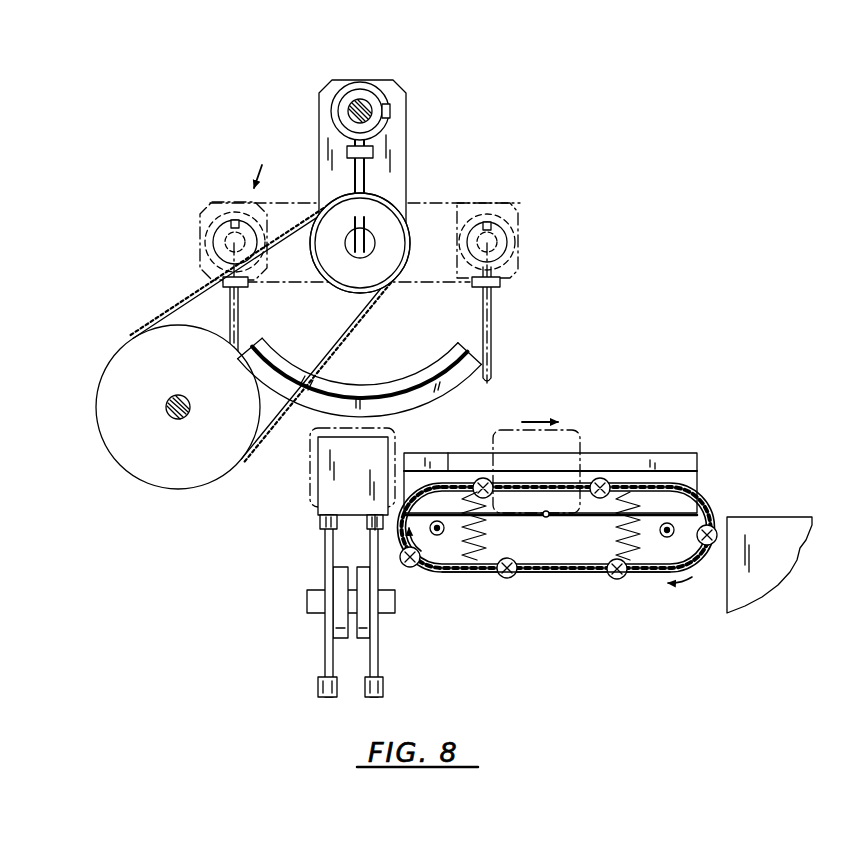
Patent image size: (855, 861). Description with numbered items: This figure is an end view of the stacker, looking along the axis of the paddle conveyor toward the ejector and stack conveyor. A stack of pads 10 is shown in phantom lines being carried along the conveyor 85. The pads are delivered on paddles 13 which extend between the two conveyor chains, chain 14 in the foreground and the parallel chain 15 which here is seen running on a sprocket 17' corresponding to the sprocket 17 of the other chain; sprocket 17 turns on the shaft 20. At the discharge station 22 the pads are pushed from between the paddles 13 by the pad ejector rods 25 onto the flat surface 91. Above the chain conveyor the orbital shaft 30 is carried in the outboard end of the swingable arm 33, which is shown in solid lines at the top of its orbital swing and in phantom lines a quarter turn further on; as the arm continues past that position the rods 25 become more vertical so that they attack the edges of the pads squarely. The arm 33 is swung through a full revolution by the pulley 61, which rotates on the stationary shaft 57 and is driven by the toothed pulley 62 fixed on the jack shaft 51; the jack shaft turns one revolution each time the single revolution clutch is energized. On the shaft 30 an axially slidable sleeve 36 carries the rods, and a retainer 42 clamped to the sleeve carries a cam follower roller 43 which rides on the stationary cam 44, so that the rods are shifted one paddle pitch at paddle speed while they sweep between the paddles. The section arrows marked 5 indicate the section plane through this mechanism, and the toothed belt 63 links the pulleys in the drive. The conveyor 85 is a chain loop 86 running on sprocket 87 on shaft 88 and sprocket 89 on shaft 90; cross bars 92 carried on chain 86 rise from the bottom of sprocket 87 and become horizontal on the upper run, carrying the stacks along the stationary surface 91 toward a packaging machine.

The section line 5- 5 is at (360, 37).
The articles 10 is at (396, 433).
The paddles 13 is at (330, 480).
The conveyor chain 14 is at (320, 527).
The chain 15 is at (375, 530).
The sprocket 17 is at (299, 606).
The sprocket 17' is at (413, 606).
The shaft 20 is at (307, 602).
The discharge station 22 is at (716, 445).
The pad ejector rods 25 is at (366, 170).
The shaft 30 is at (225, 238).
The swingable arm 33 is at (319, 96).
The sleeve 36 is at (376, 99).
The retainer 42 is at (337, 122).
The cam follower roller 43 is at (347, 153).
The stationary cam 44 is at (394, 392).
The jack shaft 51 is at (166, 407).
The stationary shaft 57 is at (366, 243).
The pulley 61 is at (404, 270).
The toothed pulley 62 is at (123, 467).
The timing belt 63 is at (192, 297).
The conveyor 85 is at (583, 580).
The chain loop 86 is at (540, 573).
The sprocket 87 is at (486, 540).
The shaft 88 is at (438, 535).
The sprocket 89 is at (617, 545).
The shaft 90 is at (665, 537).
The flat surface 91 is at (546, 517).
The cross bars 92 is at (482, 478).